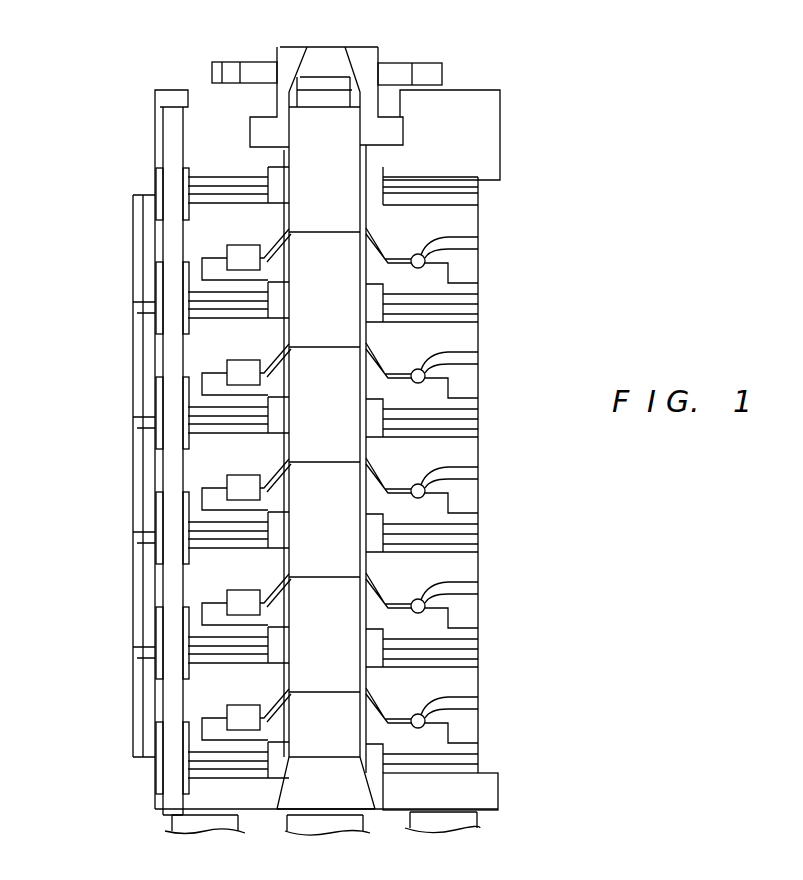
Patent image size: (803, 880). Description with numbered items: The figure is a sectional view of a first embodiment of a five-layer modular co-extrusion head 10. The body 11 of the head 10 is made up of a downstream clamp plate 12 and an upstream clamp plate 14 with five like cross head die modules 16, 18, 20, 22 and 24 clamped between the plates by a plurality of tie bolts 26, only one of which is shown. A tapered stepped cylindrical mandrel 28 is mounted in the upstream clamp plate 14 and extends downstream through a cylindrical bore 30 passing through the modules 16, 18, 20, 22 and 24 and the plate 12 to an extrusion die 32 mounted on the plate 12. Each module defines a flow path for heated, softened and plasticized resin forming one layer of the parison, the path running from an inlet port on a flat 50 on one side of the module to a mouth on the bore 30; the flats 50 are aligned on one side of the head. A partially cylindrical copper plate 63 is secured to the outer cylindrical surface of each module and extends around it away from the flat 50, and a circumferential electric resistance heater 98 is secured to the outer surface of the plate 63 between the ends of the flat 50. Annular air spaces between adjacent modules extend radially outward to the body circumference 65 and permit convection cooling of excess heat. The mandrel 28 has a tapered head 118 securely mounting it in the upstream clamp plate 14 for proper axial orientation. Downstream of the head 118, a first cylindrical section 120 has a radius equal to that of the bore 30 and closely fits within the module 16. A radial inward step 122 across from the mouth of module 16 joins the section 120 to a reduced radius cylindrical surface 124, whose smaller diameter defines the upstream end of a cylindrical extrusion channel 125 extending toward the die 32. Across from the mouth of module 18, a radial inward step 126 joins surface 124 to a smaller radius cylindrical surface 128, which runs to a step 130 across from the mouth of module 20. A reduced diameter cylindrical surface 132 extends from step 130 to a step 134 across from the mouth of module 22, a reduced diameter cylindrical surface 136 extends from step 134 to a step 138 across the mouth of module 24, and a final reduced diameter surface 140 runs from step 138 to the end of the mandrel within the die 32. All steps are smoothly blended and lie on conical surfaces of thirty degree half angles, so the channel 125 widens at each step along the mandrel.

The modular co-extrusion head 10 is at (122, 170).
The body 11 is at (152, 790).
The downstream clamp plate 12 is at (488, 133).
The upstream clamp plate 14 is at (482, 794).
The cross head die module 16 is at (482, 686).
The cross head die module 18 is at (480, 574).
The cross head die module 20 is at (488, 456).
The cross head die module 22 is at (490, 362).
The cross head die module 24 is at (490, 253).
The tie bolt 26 is at (175, 233).
The tapered stepped cylindrical mandrel 28 is at (283, 780).
The cylindrical bore 30 is at (285, 548).
The extrusion die 32 is at (283, 50).
The flat 50 is at (480, 270).
The partially cylindrical copper plate 63 is at (664, 879).
The body circumference 65 is at (155, 587).
The circumferential electric resistance heater 98 is at (130, 437).
The tapered head 118 is at (357, 792).
The first cylindrical section 120 is at (303, 729).
The radial inward step 122 is at (320, 691).
The reduced radius cylindrical surface 124 is at (303, 615).
The cylindrical extrusion channel 125 is at (286, 200).
The radial inward step 126 is at (320, 576).
The smaller radius cylindrical surface 128 is at (303, 497).
The step 130 is at (322, 461).
The reduced diameter cylindrical surface 132 is at (303, 382).
The step 134 is at (322, 346).
The reduced diameter cylindrical surface 136 is at (303, 269).
The step 138 is at (313, 231).
The final reduced diameter surface 140 is at (303, 145).